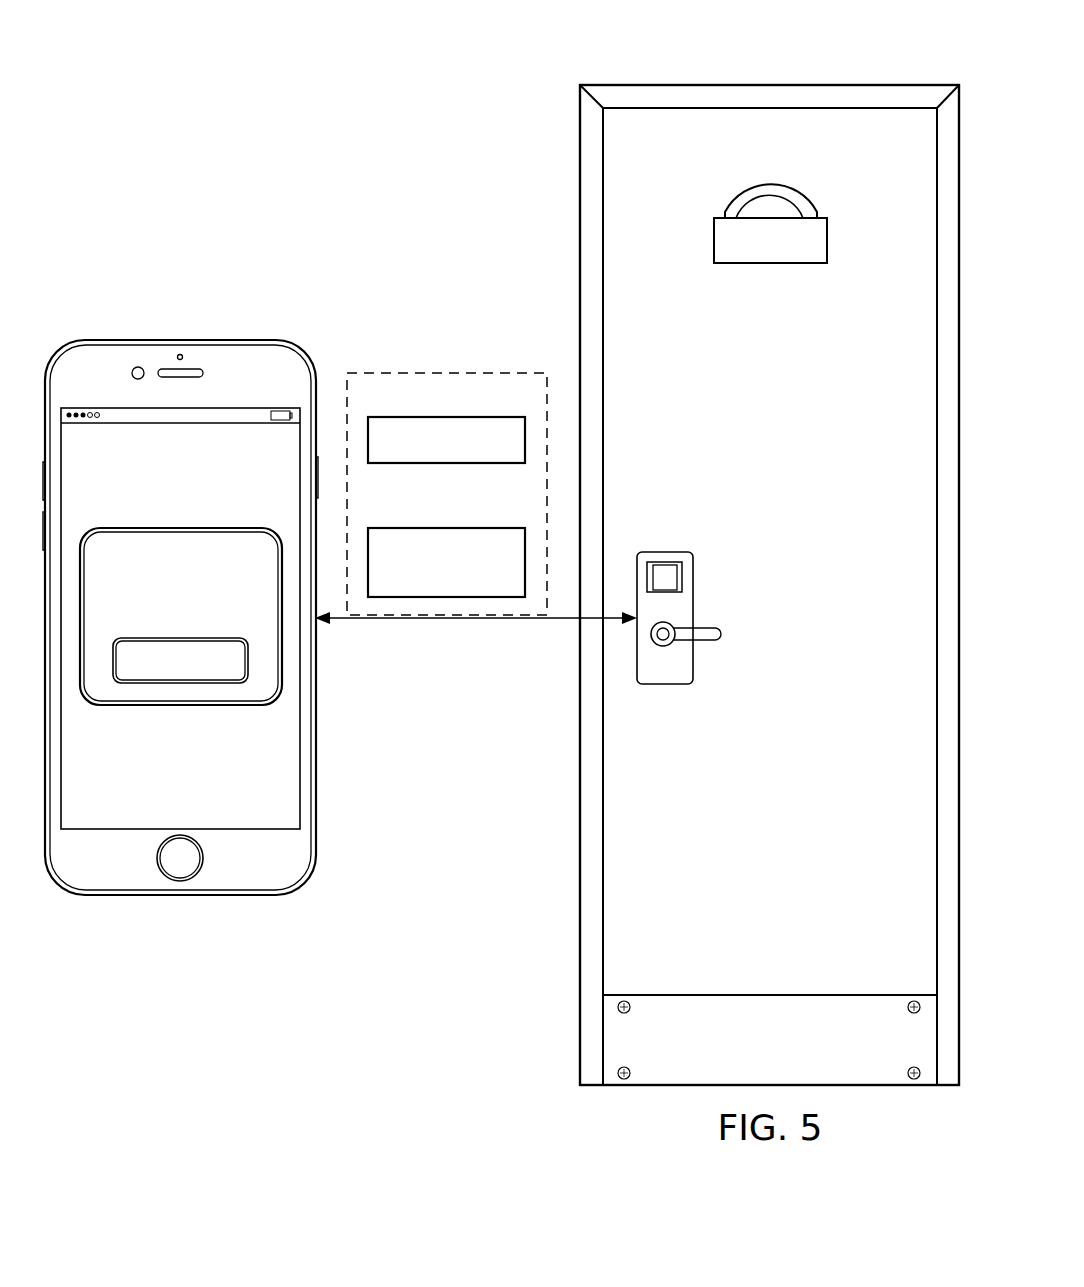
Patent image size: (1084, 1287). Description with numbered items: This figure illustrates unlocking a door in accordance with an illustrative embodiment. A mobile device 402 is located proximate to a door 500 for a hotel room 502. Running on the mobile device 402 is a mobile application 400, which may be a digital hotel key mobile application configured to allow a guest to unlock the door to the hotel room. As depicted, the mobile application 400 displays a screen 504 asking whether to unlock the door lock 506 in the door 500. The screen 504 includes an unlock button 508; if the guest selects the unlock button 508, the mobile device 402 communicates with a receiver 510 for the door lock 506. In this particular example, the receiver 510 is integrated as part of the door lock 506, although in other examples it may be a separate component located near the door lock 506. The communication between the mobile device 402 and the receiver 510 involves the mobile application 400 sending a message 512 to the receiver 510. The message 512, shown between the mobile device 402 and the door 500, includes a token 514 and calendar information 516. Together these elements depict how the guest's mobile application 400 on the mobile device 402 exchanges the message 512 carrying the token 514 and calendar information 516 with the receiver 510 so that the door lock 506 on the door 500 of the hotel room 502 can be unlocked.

The mobile application 400 is at (180, 528).
The mobile device 402 is at (180, 340).
The door 500 is at (870, 120).
The hotel room 502 is at (770, 85).
The screen 504 is at (240, 592).
The door lock 506 is at (664, 684).
The unlock button 508 is at (180, 683).
The receiver 510 is at (660, 592).
The message 512 is at (406, 373).
The token 514 is at (413, 463).
The calendar information 516 is at (480, 528).